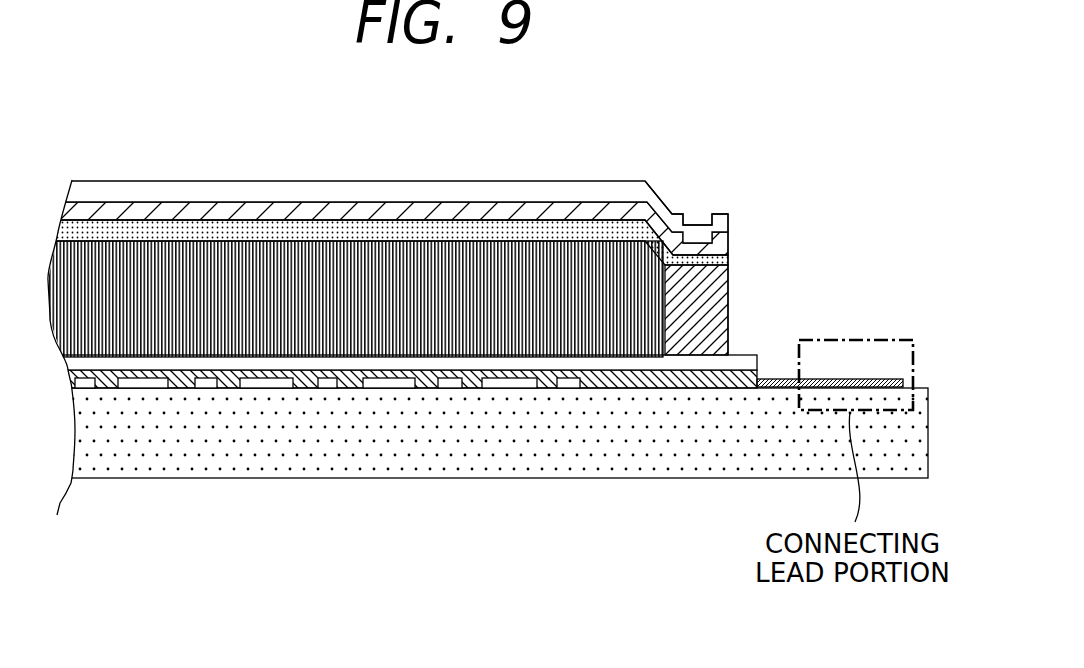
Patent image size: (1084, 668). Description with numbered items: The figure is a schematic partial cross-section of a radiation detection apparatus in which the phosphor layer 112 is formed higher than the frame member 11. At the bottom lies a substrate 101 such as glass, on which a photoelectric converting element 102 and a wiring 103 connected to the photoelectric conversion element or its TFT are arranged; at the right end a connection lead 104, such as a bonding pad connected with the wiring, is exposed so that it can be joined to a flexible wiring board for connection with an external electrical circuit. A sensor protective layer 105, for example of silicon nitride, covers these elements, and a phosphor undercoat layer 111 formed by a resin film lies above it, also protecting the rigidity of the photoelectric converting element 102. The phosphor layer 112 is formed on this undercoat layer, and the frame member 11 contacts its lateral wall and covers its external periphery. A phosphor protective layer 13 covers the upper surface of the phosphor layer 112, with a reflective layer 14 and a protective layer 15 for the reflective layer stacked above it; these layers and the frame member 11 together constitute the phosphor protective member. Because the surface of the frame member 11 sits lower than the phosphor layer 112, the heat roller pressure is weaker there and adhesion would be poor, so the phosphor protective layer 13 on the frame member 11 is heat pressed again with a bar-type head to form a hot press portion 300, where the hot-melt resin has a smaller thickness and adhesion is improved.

The frame member 11 is at (718, 298).
The phosphor protective layer 13 is at (340, 232).
The reflective layer 14 is at (437, 212).
The protective layer for the reflective layer 15 is at (538, 193).
The substrate 101 is at (140, 463).
The photoelectric converting element 102 is at (257, 384).
The wiring 103 is at (329, 384).
The connection lead 104 is at (858, 381).
The sensor protective layer 105 is at (470, 388).
The phosphor undercoat layer 111 is at (122, 365).
The phosphor layer 112 is at (226, 258).
The hot press portion 300 is at (722, 201).